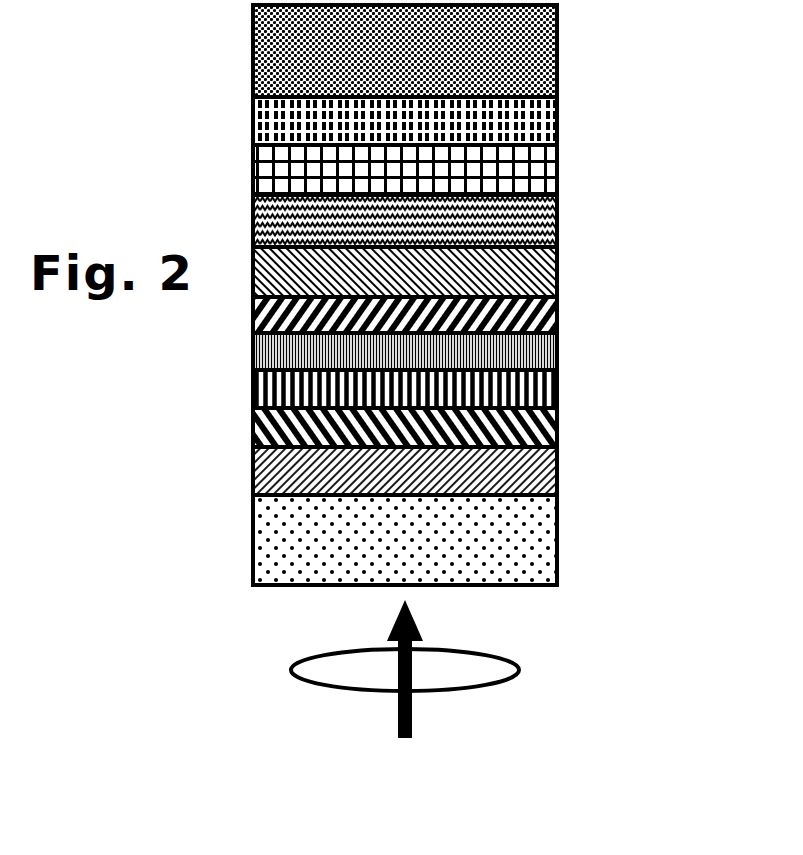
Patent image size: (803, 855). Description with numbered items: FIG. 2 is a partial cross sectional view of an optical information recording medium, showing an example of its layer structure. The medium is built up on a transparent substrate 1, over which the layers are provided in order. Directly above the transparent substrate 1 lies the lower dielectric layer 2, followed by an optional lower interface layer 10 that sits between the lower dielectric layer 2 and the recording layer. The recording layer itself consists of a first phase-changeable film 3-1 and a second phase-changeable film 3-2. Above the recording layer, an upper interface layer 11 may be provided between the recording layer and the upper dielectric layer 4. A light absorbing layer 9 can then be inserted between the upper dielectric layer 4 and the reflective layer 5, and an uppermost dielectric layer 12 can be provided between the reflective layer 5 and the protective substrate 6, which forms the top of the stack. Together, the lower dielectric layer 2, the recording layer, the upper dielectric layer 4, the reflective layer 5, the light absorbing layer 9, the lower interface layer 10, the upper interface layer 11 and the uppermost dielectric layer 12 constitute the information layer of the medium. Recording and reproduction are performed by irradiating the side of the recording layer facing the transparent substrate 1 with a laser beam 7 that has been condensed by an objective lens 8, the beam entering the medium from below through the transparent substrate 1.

The transparent substrate 1 is at (557, 538).
The lower dielectric layer 2 is at (557, 477).
The first phase-changeable film 3-1 is at (557, 388).
The second phase-changeable film 3-2 is at (557, 355).
The lower interface layer 10 is at (557, 423).
The upper interface layer 11 is at (557, 323).
The upper dielectric layer 4 is at (557, 272).
The light absorbing layer 9 is at (557, 222).
The reflective layer 5 is at (557, 173).
The uppermost dielectric layer 12 is at (557, 122).
The protective substrate 6 is at (557, 59).
The laser beam 7 is at (412, 713).
The objective lens 8 is at (519, 671).